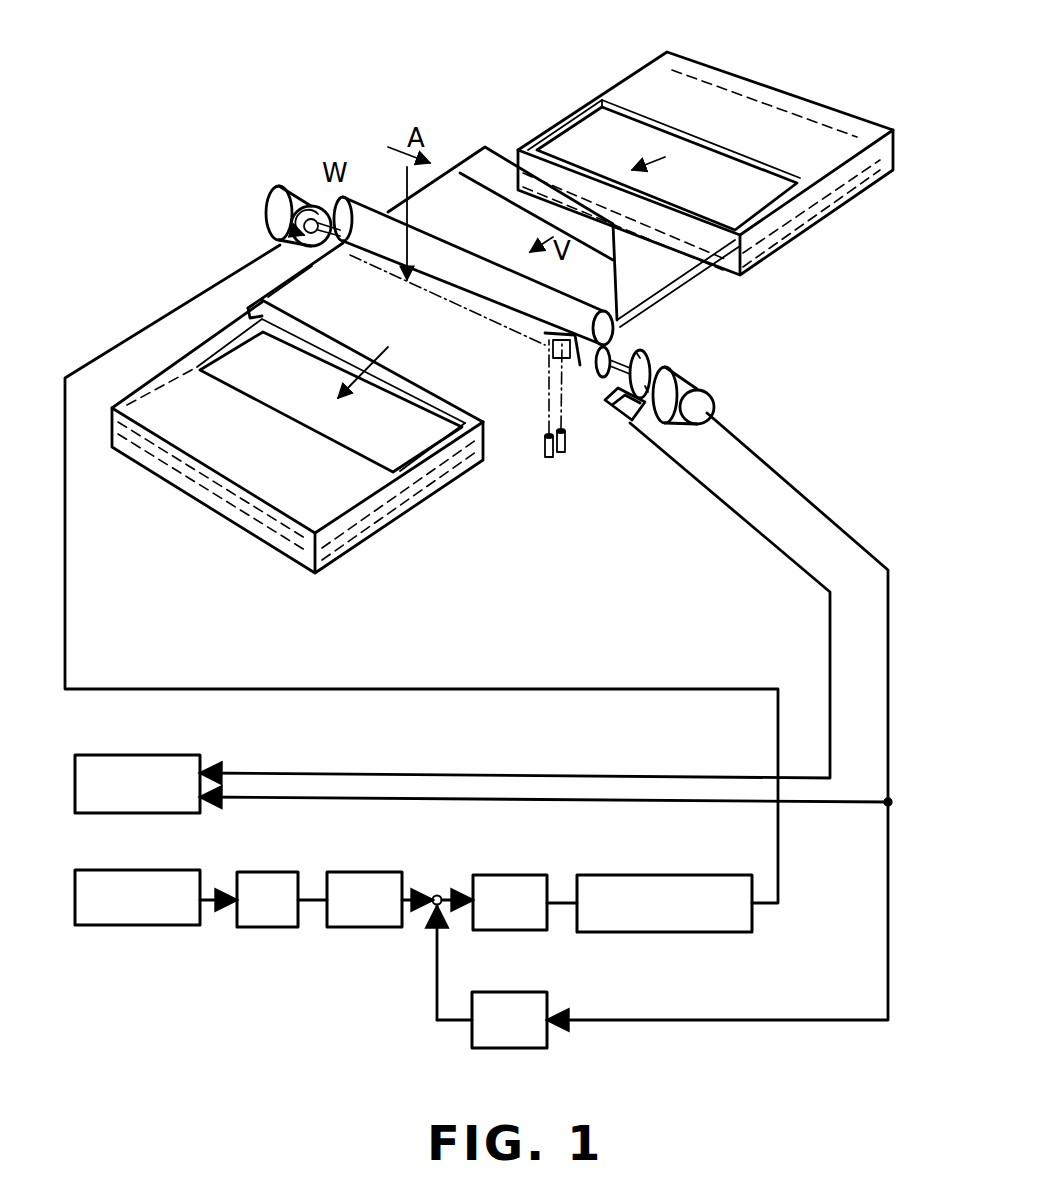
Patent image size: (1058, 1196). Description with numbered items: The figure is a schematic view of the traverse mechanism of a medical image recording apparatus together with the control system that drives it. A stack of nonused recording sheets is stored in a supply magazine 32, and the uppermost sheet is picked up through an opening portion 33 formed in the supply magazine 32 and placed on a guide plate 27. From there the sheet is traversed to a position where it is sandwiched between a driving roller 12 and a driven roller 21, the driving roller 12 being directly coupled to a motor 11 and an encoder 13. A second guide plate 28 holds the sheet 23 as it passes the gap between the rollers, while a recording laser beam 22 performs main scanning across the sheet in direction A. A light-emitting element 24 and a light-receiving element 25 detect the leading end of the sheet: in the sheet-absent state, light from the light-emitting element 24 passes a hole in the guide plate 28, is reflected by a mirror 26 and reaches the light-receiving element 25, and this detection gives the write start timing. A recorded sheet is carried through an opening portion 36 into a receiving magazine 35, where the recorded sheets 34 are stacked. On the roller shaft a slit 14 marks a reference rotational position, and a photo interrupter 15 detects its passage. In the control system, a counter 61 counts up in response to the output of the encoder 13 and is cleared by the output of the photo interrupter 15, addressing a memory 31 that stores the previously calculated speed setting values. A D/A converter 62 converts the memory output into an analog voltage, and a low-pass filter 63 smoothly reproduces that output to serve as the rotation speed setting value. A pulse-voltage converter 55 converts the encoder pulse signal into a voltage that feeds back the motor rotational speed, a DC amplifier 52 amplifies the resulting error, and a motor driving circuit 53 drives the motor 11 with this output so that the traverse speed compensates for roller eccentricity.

The motor 11 is at (275, 203).
The driving roller 12 is at (563, 367).
The encoder 13 is at (707, 400).
The slit 14 is at (657, 360).
The photo interrupter 15 is at (667, 424).
The driven roller 21 is at (358, 207).
The recording laser beam 22 is at (405, 167).
The sheet 23 is at (467, 192).
The light-emitting element 24 is at (549, 458).
The light-receiving element 25 is at (563, 455).
The mirror 26 is at (590, 375).
The guide plate 27 is at (662, 293).
The guide plate 28 is at (498, 397).
The memory 31 is at (185, 870).
The supply magazine 32 is at (762, 93).
The opening portion 33 is at (630, 113).
The recorded sheets 34 is at (410, 447).
The receiving magazine 35 is at (318, 512).
The opening portion 36 is at (357, 455).
The DC amplifier 52 is at (517, 875).
The motor driving circuit 53 is at (682, 875).
The pulse-voltage converter 55 is at (537, 992).
The counter 61 is at (193, 755).
The D/A converter 62 is at (263, 872).
The low-pass filter 63 is at (365, 872).